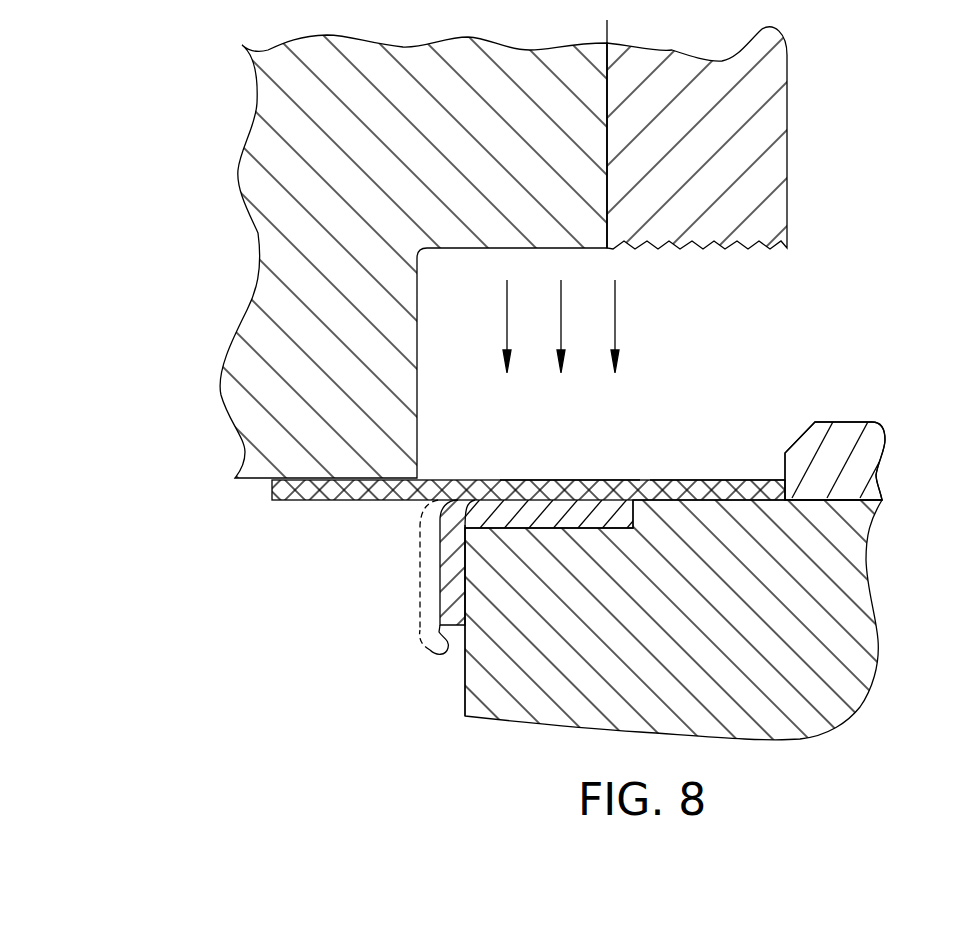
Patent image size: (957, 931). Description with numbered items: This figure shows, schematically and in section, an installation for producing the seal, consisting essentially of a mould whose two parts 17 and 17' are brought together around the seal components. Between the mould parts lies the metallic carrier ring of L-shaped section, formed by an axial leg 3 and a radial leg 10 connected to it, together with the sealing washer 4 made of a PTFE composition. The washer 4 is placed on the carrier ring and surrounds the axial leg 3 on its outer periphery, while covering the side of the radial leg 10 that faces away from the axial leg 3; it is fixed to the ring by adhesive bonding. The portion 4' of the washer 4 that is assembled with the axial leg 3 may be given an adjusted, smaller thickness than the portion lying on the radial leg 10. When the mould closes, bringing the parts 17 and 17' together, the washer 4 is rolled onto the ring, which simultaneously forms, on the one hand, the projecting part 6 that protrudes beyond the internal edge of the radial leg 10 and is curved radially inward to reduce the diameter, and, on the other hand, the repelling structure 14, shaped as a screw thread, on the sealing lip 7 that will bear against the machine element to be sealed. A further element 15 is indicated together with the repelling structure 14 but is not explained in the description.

The mould part 17 is at (430, 249).
The mould part 17' is at (710, 620).
The sealing element 15 is at (748, 480).
The repelling structure 14 is at (748, 480).
The axial leg 3 is at (600, 512).
The sealing washer 4 is at (522, 523).
The part of the sealing washer assembled with the axial leg 4' is at (404, 608).
The sealing lip 7 is at (691, 456).
The radial leg 10 is at (430, 628).
The projecting part 6 is at (440, 652).